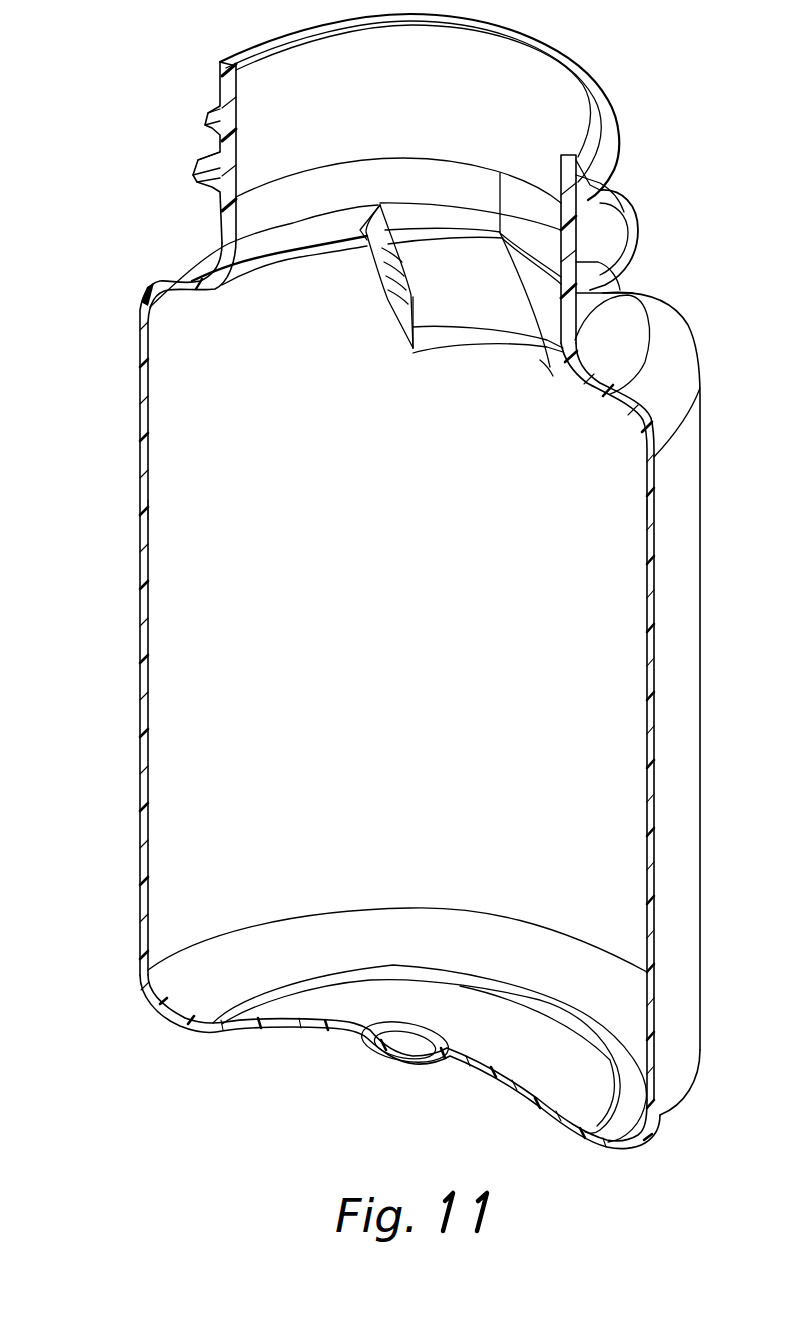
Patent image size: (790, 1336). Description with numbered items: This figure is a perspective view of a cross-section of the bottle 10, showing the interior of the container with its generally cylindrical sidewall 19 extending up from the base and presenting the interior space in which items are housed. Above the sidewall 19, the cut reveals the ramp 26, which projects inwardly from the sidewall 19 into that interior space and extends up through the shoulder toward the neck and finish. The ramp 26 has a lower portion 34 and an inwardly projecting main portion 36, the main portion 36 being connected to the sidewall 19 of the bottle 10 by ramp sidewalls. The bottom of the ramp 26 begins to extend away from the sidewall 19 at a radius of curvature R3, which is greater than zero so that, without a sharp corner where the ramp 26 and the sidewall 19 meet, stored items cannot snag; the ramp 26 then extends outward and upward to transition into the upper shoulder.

The bottle 10 is at (168, 58).
The sidewall 19 is at (503, 591).
The ramp 26 is at (459, 305).
The lower portion 34 is at (500, 350).
The main portion 36 is at (437, 290).
The radius of curvature R3 is at (533, 382).